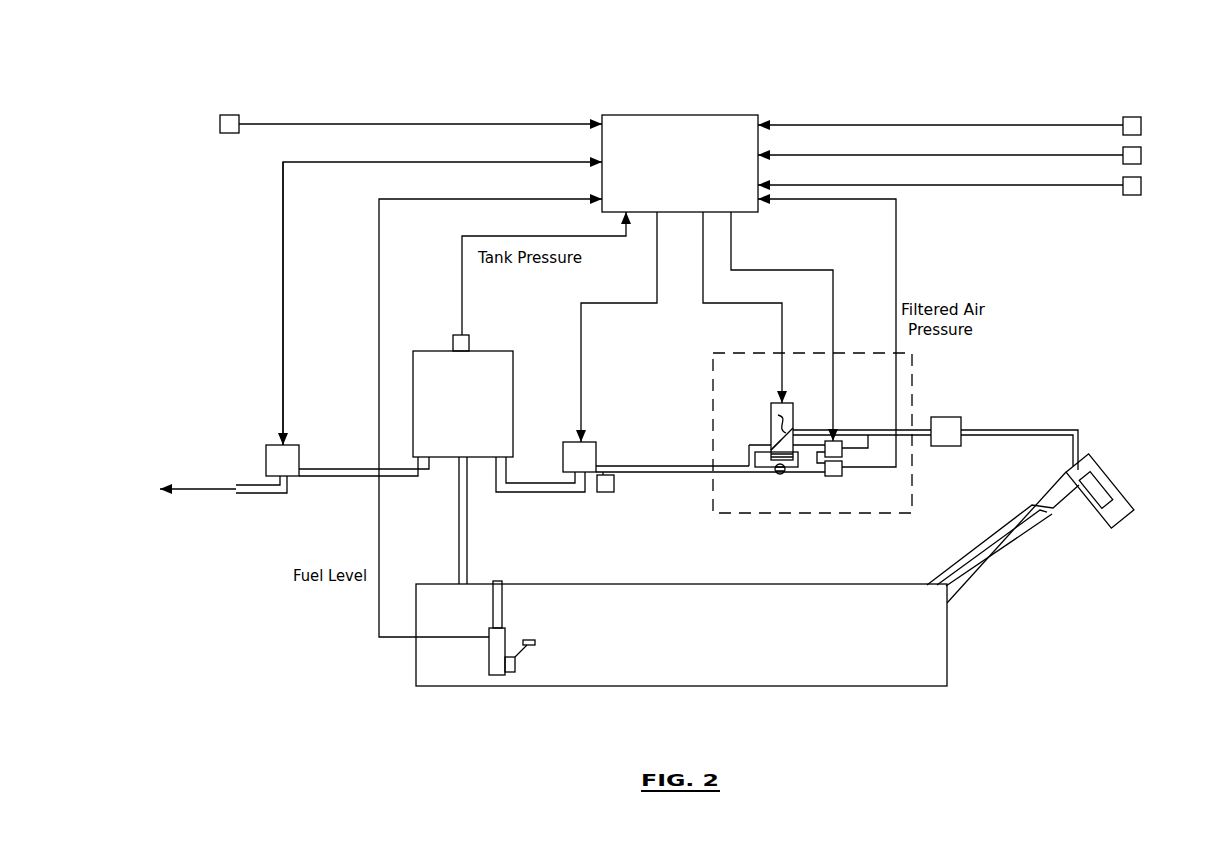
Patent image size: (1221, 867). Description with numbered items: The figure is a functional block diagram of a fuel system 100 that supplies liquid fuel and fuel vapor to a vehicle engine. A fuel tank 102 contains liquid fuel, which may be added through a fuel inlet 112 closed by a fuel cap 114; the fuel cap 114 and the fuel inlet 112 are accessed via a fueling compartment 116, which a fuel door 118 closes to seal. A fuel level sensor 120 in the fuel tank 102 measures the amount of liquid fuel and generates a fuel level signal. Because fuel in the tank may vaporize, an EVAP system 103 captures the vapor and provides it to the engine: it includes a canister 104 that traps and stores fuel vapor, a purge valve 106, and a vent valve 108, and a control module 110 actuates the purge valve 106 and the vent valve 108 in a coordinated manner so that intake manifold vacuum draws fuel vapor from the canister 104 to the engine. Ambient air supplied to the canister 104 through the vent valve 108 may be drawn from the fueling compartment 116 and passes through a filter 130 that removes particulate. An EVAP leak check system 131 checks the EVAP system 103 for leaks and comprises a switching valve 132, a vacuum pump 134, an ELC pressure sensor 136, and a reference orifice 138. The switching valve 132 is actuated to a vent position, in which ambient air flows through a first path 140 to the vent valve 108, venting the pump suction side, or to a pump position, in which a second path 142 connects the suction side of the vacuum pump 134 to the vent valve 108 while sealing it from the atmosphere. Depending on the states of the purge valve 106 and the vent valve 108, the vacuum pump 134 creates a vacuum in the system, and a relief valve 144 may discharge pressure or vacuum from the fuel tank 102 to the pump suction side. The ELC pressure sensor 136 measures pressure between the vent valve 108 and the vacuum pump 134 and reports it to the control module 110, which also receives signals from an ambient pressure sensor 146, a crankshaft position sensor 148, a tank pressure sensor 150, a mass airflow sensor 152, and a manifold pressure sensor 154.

The fuel system 100 is at (186, 56).
The fuel tank 102 is at (685, 584).
The EVAP system 103 is at (255, 306).
The canister 104 is at (513, 371).
The purge valve 106 is at (272, 445).
The vent valve 108 is at (570, 442).
The control module 110 is at (680, 115).
The fuel inlet 112 is at (1080, 503).
The fuel cap 114 is at (1109, 500).
The fueling compartment 116 is at (1125, 508).
The fuel door 118 is at (1110, 478).
The fuel level sensor 120 is at (506, 632).
The filter 130 is at (945, 417).
The EVAP leak check (ELC) system 131 is at (713, 370).
The switching valve 132 is at (776, 403).
The vacuum pump 134 is at (841, 441).
The ELC pressure sensor 136 is at (834, 476).
The reference orifice 138 is at (781, 475).
The first path 140 is at (778, 415).
The second path 142 is at (775, 446).
The relief valve 144 is at (614, 486).
The ambient pressure sensor 146 is at (1141, 124).
The crankshaft position sensor 148 is at (1141, 154).
The tank pressure sensor 150 is at (453, 338).
The mass airflow sensor 152 is at (1141, 185).
The manifold pressure sensor 154 is at (222, 117).